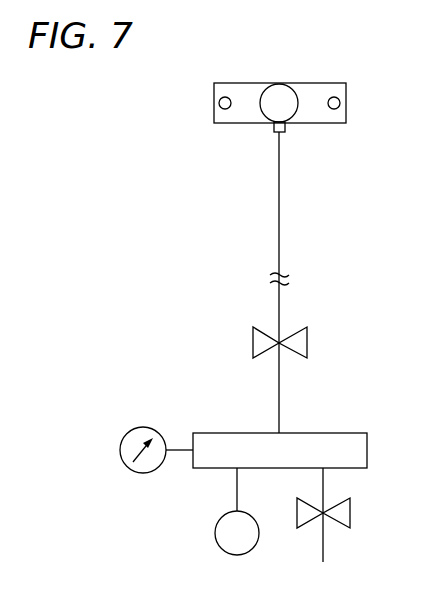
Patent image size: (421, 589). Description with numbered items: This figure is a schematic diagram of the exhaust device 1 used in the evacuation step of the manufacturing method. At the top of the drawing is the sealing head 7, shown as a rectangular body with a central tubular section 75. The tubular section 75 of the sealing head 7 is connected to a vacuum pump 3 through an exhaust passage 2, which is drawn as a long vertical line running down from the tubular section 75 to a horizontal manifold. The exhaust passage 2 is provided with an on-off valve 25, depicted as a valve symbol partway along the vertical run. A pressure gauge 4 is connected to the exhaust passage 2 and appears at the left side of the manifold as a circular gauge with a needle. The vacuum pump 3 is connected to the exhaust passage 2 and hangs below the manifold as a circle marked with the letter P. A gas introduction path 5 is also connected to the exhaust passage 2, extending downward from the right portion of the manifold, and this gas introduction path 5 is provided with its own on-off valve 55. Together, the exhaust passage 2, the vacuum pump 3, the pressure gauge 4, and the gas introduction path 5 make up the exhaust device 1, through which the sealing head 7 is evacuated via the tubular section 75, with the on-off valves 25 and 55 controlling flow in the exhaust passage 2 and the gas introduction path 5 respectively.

The exhaust device 1 is at (192, 255).
The sealing head 7 is at (322, 84).
The tubular section 75 is at (278, 94).
The exhaust passage 2 is at (282, 397).
The on-off valve 25 is at (254, 342).
The pressure gauge 4 is at (145, 428).
The vacuum pump 3 is at (213, 529).
The gas introduction path 5 is at (327, 538).
The on-off valve 55 is at (351, 512).